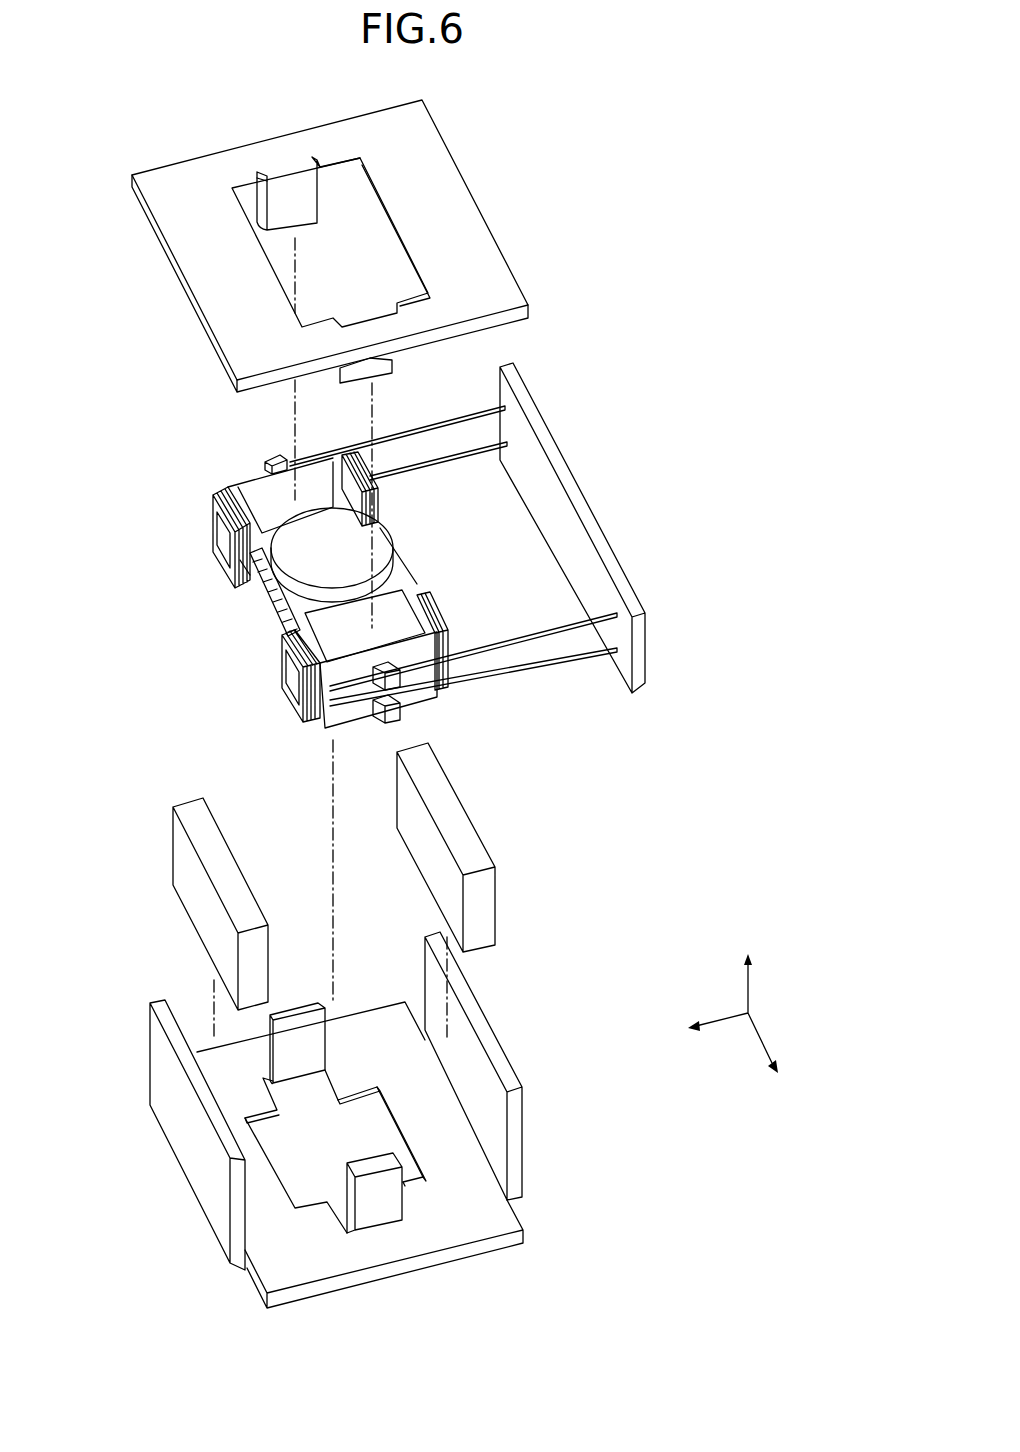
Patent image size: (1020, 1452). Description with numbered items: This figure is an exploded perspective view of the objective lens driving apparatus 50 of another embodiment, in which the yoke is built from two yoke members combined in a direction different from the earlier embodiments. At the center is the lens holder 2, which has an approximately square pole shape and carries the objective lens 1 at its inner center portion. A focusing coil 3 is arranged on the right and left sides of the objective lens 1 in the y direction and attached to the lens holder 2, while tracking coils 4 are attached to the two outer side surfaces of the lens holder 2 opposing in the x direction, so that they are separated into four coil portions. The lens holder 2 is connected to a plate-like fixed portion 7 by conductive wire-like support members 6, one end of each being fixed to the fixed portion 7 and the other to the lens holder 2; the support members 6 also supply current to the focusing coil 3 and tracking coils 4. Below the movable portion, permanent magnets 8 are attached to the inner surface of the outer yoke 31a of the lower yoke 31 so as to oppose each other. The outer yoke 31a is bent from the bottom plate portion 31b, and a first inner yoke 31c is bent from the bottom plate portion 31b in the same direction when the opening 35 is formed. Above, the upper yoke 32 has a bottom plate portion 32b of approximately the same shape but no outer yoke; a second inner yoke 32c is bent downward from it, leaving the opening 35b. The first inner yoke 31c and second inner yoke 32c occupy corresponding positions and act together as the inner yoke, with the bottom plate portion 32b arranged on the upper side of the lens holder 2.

The objective lens 1 is at (382, 540).
The lens holder 2 is at (262, 495).
The focusing coil 3 is at (270, 602).
The tracking coil 4 is at (373, 484).
The support member 6 is at (452, 408).
The fixed portion 7 is at (565, 543).
The permanent magnet 8 is at (455, 823).
The lower yoke 31 is at (546, 1147).
The outer yoke 31a is at (478, 1088).
The bottom plate portion 31b is at (463, 1223).
The first inner yoke 31c is at (302, 1045).
The upper yoke 32 is at (503, 185).
The bottom plate portion 32b is at (195, 192).
The second inner yoke 32c is at (298, 217).
The opening 35 is at (320, 1180).
The opening 35b is at (348, 200).
The objective lens driving apparatus 50 is at (692, 860).